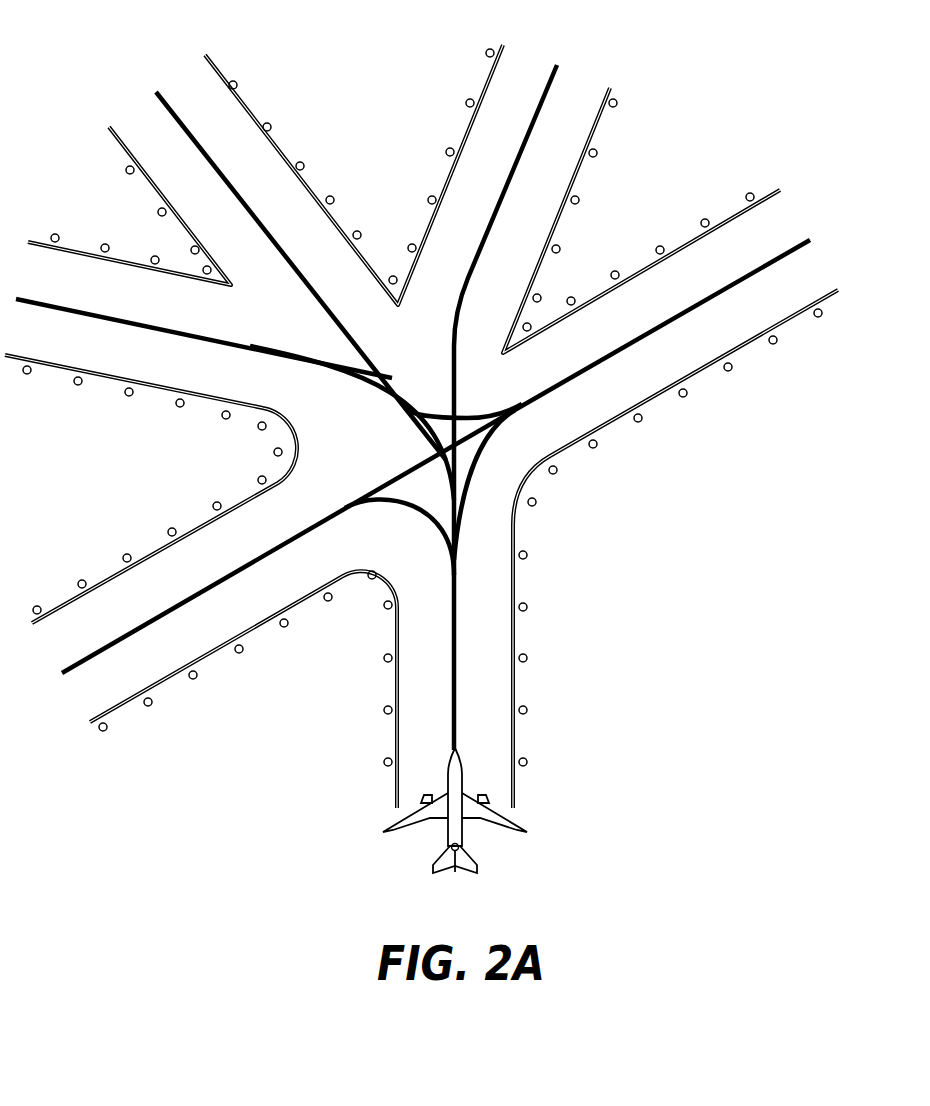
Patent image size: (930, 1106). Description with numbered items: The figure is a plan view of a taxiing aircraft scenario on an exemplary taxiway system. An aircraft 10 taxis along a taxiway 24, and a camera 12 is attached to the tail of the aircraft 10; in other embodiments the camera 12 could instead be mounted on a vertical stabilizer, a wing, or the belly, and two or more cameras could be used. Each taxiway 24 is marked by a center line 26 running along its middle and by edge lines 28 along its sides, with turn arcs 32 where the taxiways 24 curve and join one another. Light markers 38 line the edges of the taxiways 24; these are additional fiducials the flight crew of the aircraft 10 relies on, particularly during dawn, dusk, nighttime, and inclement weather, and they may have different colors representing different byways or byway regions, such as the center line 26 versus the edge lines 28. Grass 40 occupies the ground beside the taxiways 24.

The aircraft 10 is at (457, 777).
The camera 12 is at (459, 847).
The taxiway 24 is at (555, 181).
The center line 26 is at (500, 203).
The edge line 28 is at (469, 127).
The turn arc 32 is at (470, 490).
The light markers 38 is at (572, 300).
The grass 40 is at (232, 776).